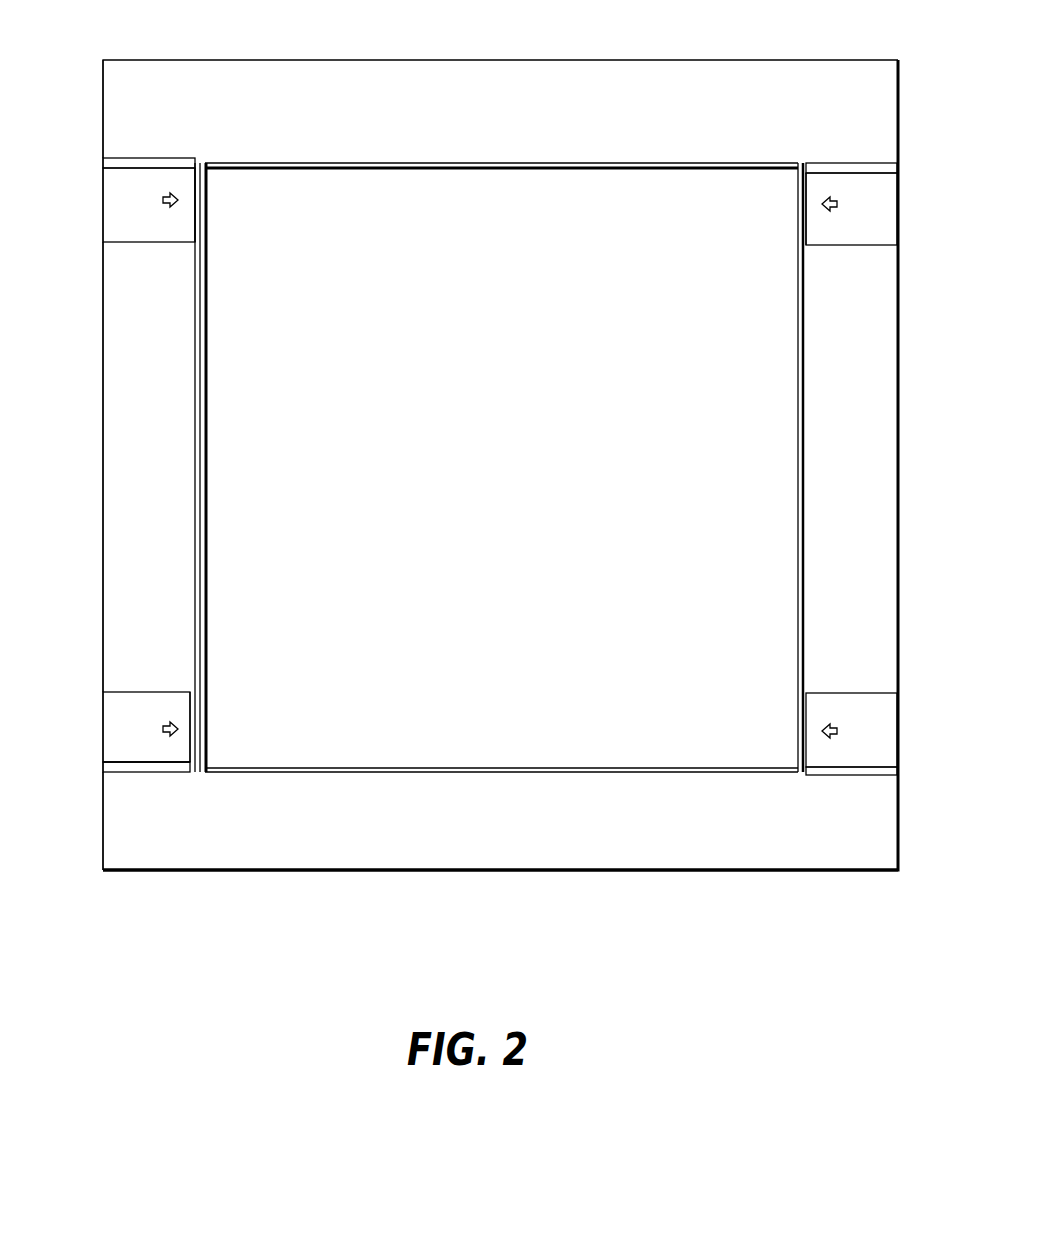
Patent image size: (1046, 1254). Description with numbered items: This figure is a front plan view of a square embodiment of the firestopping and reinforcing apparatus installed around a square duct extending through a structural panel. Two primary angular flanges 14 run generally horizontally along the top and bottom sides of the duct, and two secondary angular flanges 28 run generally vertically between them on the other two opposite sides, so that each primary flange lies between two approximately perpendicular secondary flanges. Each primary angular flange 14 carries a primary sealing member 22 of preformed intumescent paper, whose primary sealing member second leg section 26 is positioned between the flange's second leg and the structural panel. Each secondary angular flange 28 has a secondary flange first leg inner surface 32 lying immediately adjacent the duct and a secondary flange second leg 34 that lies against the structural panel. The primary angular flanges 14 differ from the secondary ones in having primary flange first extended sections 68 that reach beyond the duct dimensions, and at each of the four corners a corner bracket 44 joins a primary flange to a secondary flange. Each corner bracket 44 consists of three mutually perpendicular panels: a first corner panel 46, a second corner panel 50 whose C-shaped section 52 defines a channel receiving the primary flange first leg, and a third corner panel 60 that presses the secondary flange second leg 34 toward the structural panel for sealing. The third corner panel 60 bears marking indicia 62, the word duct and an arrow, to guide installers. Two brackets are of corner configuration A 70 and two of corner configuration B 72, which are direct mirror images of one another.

The primary angular flange 14 is at (240, 117).
The primary sealing member 22 is at (847, 872).
The primary sealing member second leg section 26 is at (228, 870).
The secondary angular flange 28 is at (838, 312).
The secondary flange first leg inner surface 32 is at (798, 330).
The secondary flange second leg 34 is at (138, 312).
The corner bracket 44 is at (180, 232).
The first corner panel 46 is at (180, 700).
The second corner panel 50 is at (160, 758).
The C-shaped section 52 is at (140, 167).
The third corner panel 60 is at (116, 729).
The marking indicia 62 is at (118, 218).
The primary flange first extended section 68 is at (190, 101).
The corner configuration A 70 is at (818, 186).
The corner configuration B 72 is at (178, 185).